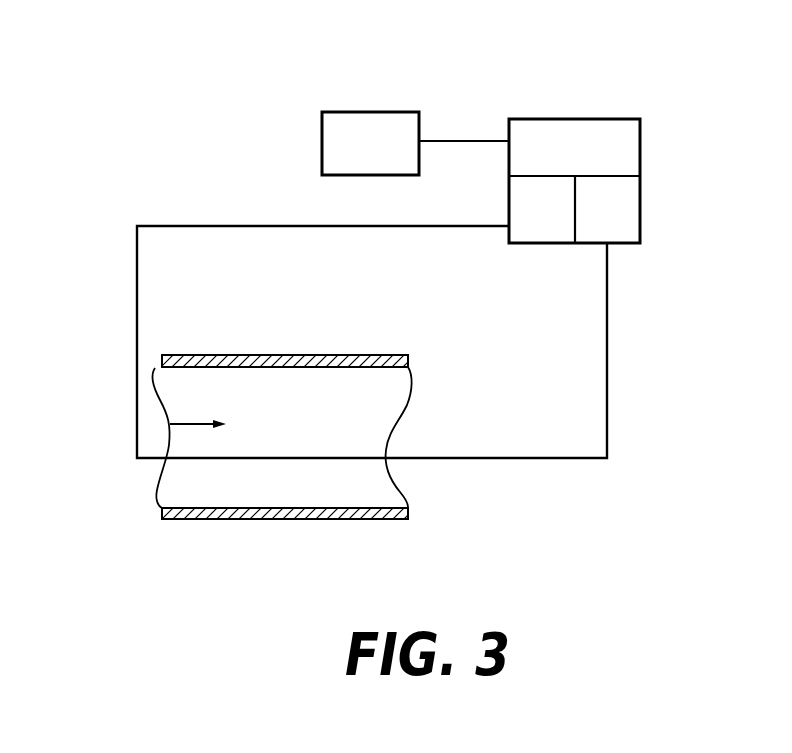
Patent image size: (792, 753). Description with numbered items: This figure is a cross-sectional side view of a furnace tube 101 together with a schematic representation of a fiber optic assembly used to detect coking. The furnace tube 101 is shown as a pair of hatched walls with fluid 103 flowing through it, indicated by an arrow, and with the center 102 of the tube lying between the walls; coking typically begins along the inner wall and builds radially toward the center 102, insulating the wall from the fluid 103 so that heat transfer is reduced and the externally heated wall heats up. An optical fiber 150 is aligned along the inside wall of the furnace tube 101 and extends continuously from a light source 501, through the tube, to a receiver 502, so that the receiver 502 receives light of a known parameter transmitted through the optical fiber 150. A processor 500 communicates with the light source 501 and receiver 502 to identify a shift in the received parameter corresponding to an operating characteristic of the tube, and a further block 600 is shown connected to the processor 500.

The power supply 600 is at (322, 137).
The processor 500 is at (582, 119).
The light source 501 is at (508, 207).
The receiver 502 is at (642, 218).
The optical fiber 150 is at (433, 457).
The furnace tube 101 is at (294, 355).
The center of the tube 102 is at (303, 482).
The fluid flowing through the tube 103 is at (197, 423).